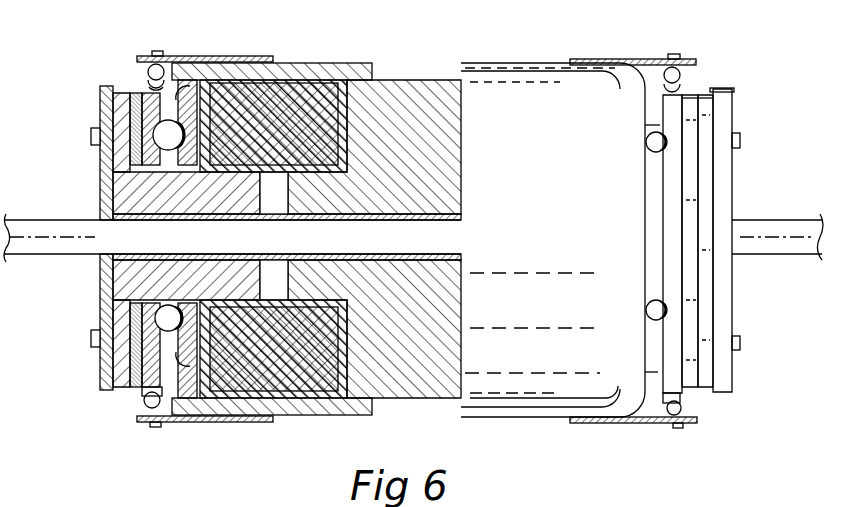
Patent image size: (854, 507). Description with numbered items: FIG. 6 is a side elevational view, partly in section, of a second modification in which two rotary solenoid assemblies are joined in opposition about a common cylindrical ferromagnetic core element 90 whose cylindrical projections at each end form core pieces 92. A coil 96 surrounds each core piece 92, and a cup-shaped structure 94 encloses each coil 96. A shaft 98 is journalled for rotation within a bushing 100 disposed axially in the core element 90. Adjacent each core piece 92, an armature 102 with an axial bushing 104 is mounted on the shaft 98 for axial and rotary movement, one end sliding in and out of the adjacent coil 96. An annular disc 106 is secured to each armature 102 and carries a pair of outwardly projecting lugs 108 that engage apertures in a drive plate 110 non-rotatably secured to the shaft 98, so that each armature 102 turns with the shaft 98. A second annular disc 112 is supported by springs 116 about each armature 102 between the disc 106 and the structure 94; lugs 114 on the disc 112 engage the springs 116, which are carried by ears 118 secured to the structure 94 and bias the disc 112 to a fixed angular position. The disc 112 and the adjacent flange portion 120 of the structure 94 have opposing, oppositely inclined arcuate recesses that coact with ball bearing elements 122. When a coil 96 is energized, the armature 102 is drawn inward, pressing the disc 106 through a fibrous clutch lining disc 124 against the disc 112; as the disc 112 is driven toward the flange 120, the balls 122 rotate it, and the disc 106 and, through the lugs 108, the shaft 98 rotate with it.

The cylindrical ferromagnetic core element 90 is at (392, 100).
The core piece 92 is at (318, 188).
The cup-shaped structure 94 is at (288, 412).
The coil 96 is at (286, 100).
The shaft 98 is at (22, 219).
The bushing 100 is at (455, 207).
The armature 102 is at (118, 284).
The axial bushing 104 is at (113, 212).
The annular disc 106 is at (108, 86).
The outwardly projecting lug 108 is at (91, 134).
The drive plate 110 is at (100, 272).
The second annular disc 112 is at (172, 120).
The lug 114 is at (147, 397).
The spring 116 is at (150, 66).
The ear 118 is at (216, 58).
The flange portion 120 is at (246, 62).
The ball bearing element 122 is at (175, 125).
The clutch lining disc 124 is at (125, 93).